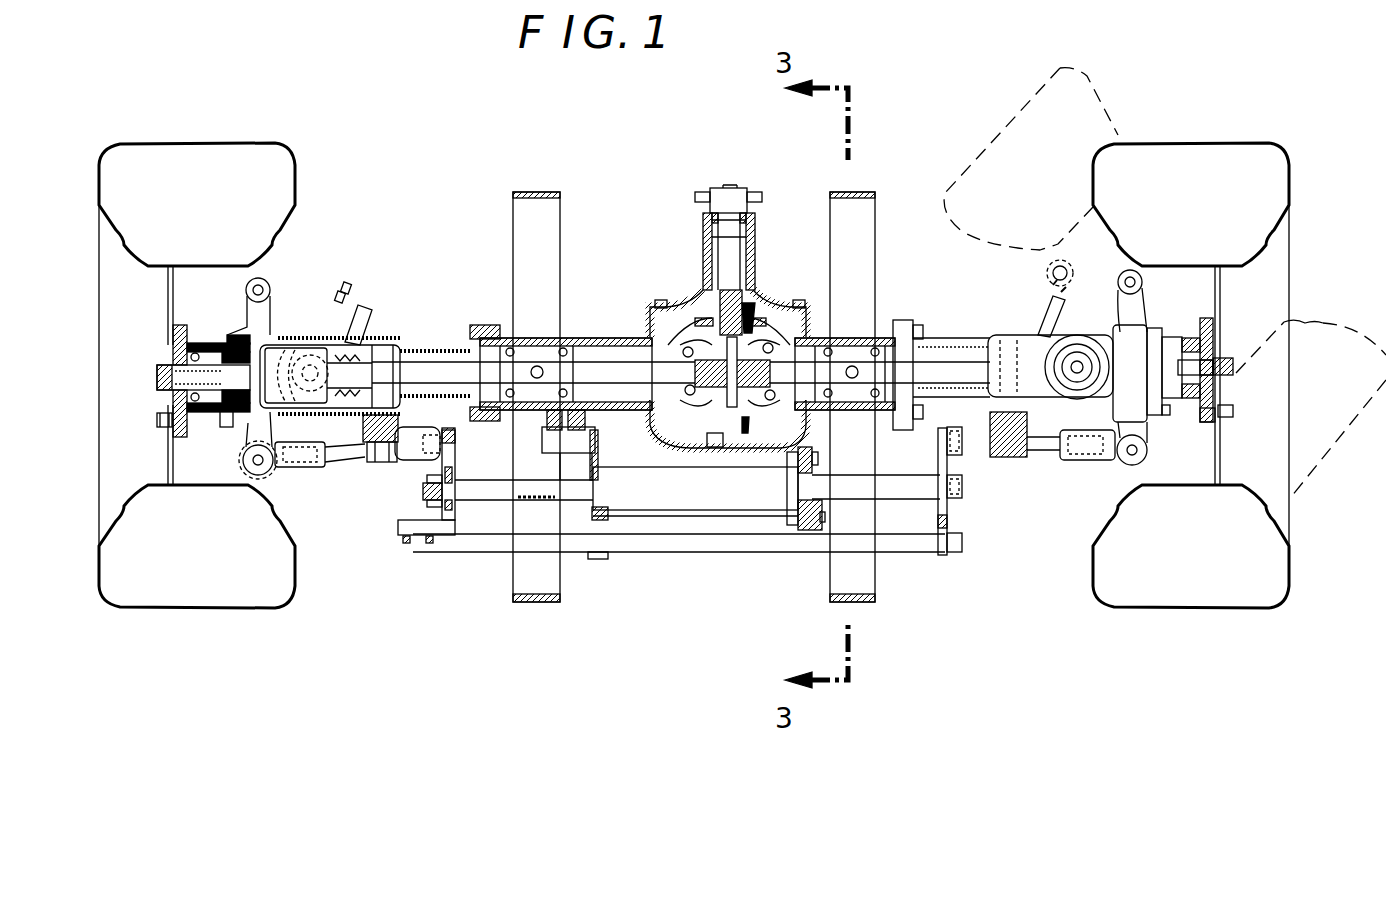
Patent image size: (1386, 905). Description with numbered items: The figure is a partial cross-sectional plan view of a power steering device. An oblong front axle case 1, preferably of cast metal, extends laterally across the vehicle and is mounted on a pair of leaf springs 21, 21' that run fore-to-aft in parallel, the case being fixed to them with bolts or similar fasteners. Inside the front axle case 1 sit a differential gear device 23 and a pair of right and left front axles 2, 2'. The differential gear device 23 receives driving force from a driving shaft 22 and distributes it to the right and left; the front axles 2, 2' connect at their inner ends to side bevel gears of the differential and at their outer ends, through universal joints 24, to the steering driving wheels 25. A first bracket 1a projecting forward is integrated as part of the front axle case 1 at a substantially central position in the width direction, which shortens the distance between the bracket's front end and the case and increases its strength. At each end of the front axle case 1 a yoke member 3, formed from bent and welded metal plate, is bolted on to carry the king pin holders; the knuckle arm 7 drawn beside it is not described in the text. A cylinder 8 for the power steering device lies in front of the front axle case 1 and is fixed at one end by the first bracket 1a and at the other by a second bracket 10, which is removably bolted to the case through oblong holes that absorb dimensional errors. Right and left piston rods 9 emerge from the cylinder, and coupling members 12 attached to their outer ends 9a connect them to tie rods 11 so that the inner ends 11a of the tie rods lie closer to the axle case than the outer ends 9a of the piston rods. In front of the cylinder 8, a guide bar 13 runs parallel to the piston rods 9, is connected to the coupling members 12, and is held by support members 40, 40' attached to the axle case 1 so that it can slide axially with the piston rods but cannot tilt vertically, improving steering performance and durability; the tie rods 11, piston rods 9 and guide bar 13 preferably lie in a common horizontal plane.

The front axle case 1 is at (595, 338).
The first bracket 1a is at (803, 525).
The front axle 2 is at (533, 414).
The front axle 2' is at (880, 392).
The yoke member 3 is at (335, 347).
The knuckle arm 7 is at (262, 278).
The cylinder 8 is at (683, 490).
The piston rod 9 is at (492, 490).
The outer end of piston rod 9a is at (427, 545).
The second bracket 10 is at (593, 462).
The tie rod 11 is at (343, 453).
The inner end of tie rod 11a is at (448, 430).
The coupling member 12 is at (405, 470).
The guide bar 13 is at (737, 540).
The leaf spring 21 is at (526, 359).
The leaf spring 21' is at (877, 350).
The driving shaft 22 is at (733, 253).
The differential gear device 23 is at (688, 307).
The universal joint 24 is at (1027, 337).
The steering driving wheel 25 is at (192, 160).
The support member 40 is at (619, 572).
The support member 40' is at (907, 540).